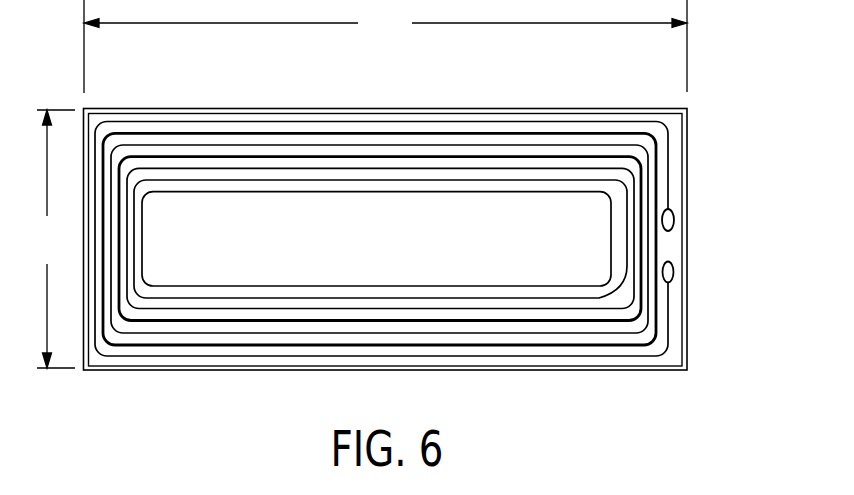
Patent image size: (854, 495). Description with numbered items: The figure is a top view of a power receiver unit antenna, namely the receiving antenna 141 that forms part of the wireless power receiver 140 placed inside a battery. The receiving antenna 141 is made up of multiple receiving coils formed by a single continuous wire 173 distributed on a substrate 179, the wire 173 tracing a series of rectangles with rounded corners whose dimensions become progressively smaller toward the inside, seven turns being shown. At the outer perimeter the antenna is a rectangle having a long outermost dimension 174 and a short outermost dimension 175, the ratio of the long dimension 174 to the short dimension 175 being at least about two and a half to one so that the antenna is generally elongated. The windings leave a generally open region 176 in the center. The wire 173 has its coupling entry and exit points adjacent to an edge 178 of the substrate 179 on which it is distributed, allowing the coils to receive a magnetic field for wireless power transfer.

The wireless power receiver 140 is at (718, 131).
The receiving antenna 141 is at (668, 220).
The wire 173 is at (387, 371).
The long outermost dimension 174 is at (385, 46).
The short outermost dimension 175 is at (51, 239).
The open region 176 is at (327, 252).
The edge 178 is at (668, 272).
The substrate 179 is at (683, 302).